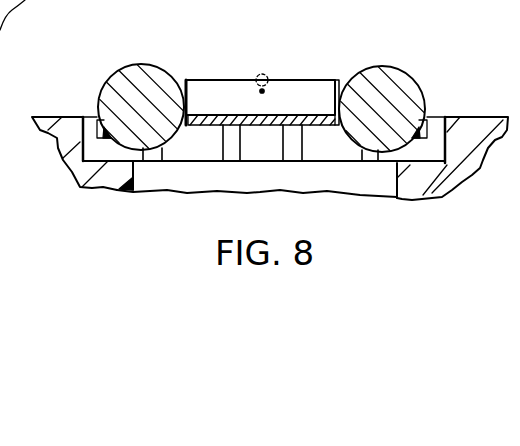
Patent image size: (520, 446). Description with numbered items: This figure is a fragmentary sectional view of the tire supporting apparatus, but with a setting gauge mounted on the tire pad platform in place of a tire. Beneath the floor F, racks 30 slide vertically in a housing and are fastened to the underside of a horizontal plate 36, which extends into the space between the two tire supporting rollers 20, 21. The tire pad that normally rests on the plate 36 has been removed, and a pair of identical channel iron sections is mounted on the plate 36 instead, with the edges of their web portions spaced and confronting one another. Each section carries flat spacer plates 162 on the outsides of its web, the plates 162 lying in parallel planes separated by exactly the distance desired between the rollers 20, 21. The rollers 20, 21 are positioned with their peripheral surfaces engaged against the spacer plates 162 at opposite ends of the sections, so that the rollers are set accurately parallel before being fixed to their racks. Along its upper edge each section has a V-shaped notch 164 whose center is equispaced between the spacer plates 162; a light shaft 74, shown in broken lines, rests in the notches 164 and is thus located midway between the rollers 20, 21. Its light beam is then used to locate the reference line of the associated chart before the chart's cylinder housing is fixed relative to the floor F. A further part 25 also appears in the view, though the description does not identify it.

The floor F is at (484, 117).
The roller 20 is at (113, 72).
The roller 21 is at (414, 79).
The base member 25 is at (118, 186).
The rack 30 is at (243, 147).
The plate 36 is at (213, 126).
The light shaft 74 is at (267, 70).
The spacer plate 162 is at (187, 79).
The V-shaped notch 164 is at (265, 89).